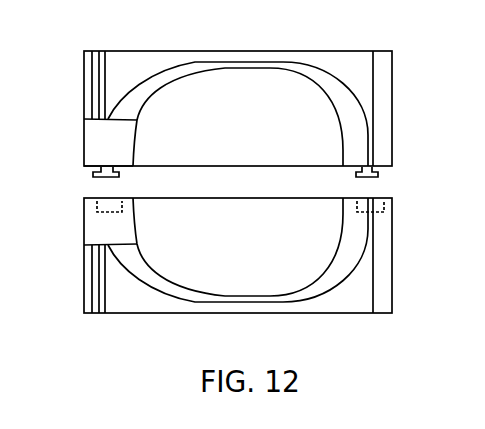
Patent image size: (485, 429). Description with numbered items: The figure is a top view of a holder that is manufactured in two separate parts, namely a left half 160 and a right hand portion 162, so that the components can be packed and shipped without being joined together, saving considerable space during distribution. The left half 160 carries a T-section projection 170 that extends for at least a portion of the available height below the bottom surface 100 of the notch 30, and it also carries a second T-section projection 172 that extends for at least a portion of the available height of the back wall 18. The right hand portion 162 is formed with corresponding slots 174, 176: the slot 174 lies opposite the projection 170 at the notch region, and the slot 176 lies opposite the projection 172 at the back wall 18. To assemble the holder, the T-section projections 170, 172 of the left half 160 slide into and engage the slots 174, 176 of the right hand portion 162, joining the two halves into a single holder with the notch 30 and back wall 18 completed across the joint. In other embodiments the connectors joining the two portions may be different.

The back wall 18 is at (392, 138).
The notch 30 is at (84, 126).
The bottom surface 100 is at (98, 150).
The left half 160 is at (338, 52).
The right hand portion 162 is at (363, 313).
The T-section projection 170 is at (96, 174).
The T-section projection 172 is at (378, 174).
The slot 174 is at (97, 207).
The slot 176 is at (383, 210).